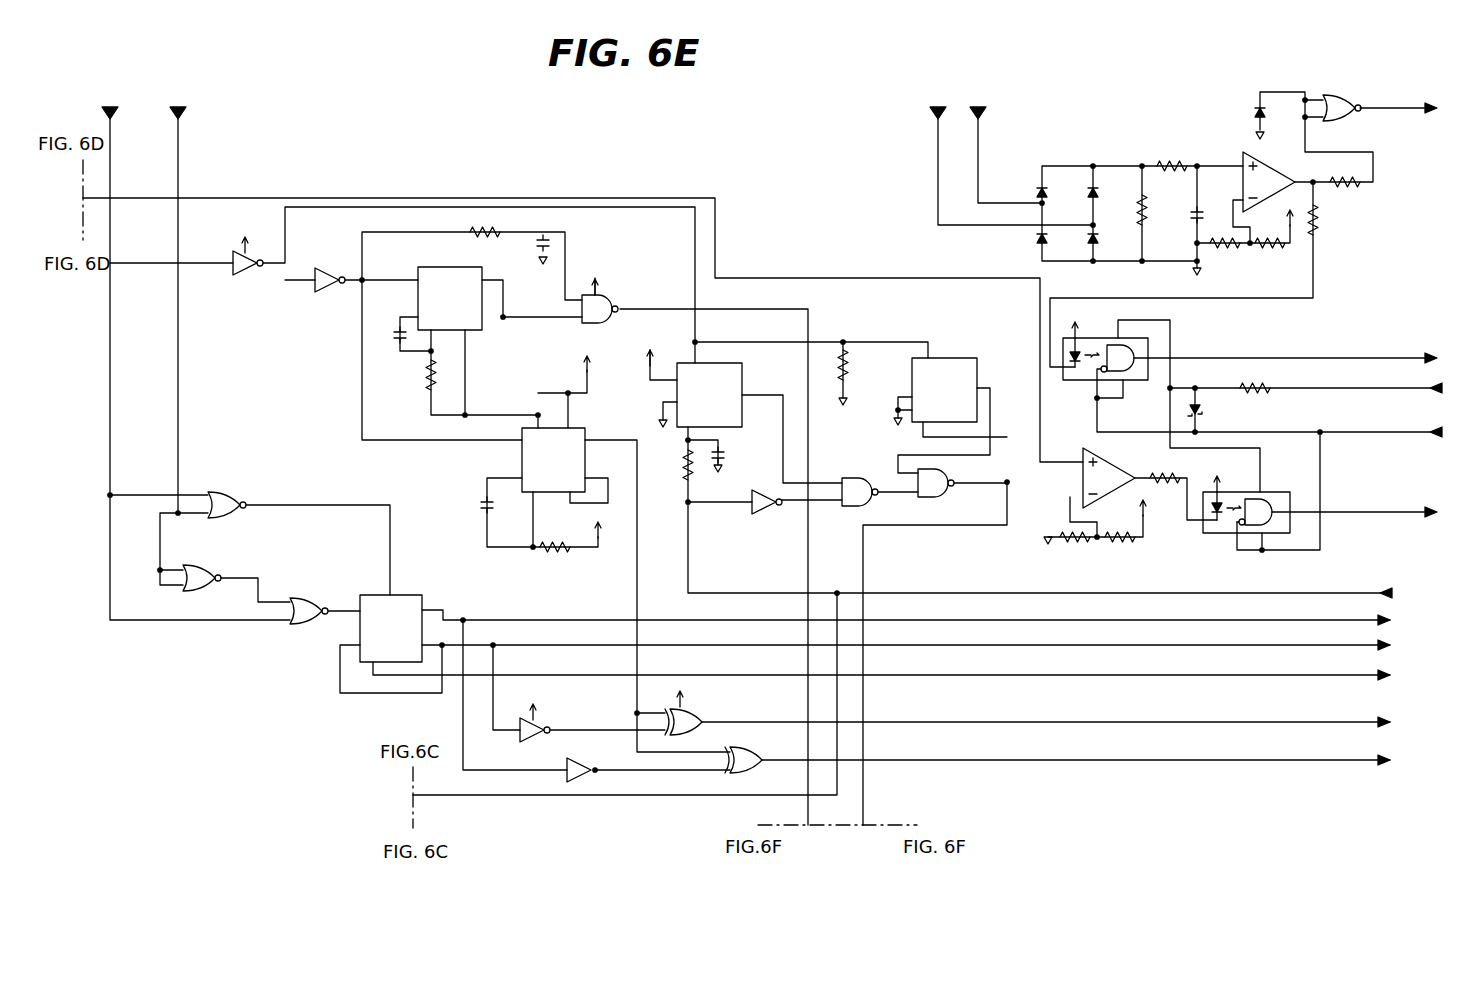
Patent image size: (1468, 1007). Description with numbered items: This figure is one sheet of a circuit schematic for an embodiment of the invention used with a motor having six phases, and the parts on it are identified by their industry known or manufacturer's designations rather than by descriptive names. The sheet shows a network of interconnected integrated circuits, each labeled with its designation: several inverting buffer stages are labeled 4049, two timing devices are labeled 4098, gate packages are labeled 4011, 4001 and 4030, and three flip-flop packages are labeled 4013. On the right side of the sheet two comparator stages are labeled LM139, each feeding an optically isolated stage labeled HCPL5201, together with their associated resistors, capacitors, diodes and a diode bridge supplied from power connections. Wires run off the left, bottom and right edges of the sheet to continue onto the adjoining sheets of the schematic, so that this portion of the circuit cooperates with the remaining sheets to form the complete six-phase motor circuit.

The hex inverting buffer (CD4049) 4049 is at (286, 298).
The monostable multivibrator (CD4098) 4098 is at (501, 379).
The quad NAND gate (CD4011) 4011 is at (597, 300).
The dual D flip-flop (CD4013) 4013 is at (668, 510).
The quad NOR gate (CD4001) 4001 is at (305, 600).
The quad exclusive-OR gate (CD4030) 4030 is at (752, 752).
The voltage comparator LM139 is at (1250, 163).
The optocoupler HCPL5201 is at (1150, 345).